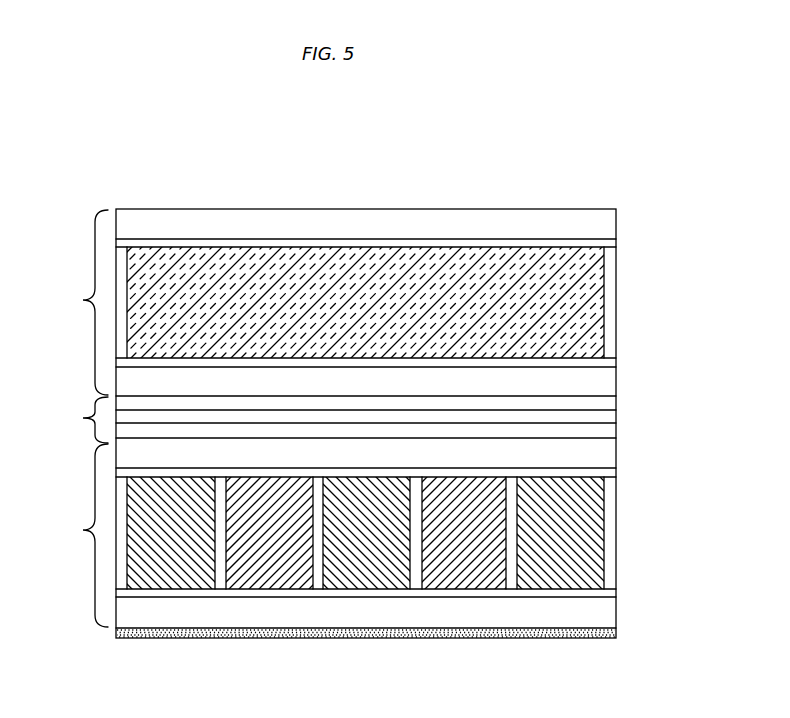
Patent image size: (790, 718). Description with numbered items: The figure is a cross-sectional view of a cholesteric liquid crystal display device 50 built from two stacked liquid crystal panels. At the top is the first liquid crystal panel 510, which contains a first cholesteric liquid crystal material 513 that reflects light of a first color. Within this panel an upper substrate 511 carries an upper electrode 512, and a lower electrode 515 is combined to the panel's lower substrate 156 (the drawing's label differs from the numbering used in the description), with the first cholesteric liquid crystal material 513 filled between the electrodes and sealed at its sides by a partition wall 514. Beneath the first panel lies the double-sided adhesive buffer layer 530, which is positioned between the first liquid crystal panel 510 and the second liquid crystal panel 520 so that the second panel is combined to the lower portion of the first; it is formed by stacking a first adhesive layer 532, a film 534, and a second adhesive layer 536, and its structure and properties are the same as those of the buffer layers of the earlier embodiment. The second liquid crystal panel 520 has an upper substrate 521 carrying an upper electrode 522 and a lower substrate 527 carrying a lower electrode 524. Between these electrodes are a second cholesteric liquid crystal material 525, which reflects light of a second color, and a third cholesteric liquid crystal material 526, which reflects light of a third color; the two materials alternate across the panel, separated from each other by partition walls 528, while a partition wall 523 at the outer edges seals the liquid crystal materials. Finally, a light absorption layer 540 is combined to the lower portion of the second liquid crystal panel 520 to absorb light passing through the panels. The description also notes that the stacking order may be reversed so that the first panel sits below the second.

The cholesteric liquid crystal display device 50 is at (405, 129).
The first liquid crystal panel 510 is at (76, 302).
The upper substrate 511 is at (265, 220).
The upper electrode 512 is at (607, 243).
The first cholesteric liquid crystal material 513 is at (470, 270).
The partition wall 514 is at (607, 296).
The lower electrode 515 is at (607, 362).
The adhesive layer 156 is at (607, 382).
The double-sided adhesive buffer layer 530 is at (79, 420).
The first adhesive layer 532 is at (607, 402).
The film 534 is at (606, 417).
The second adhesive layer 536 is at (607, 430).
The second liquid crystal panel 520 is at (76, 535).
The upper substrate 521 is at (607, 455).
The upper electrode 522 is at (607, 473).
The partition wall 523 is at (607, 533).
The lower electrode 524 is at (607, 591).
The second cholesteric liquid crystal material 525 is at (565, 566).
The third cholesteric liquid crystal material 526 is at (460, 568).
The lower substrate 527 is at (607, 612).
The partition wall 528 is at (513, 576).
The light emitting layer 540 is at (118, 633).